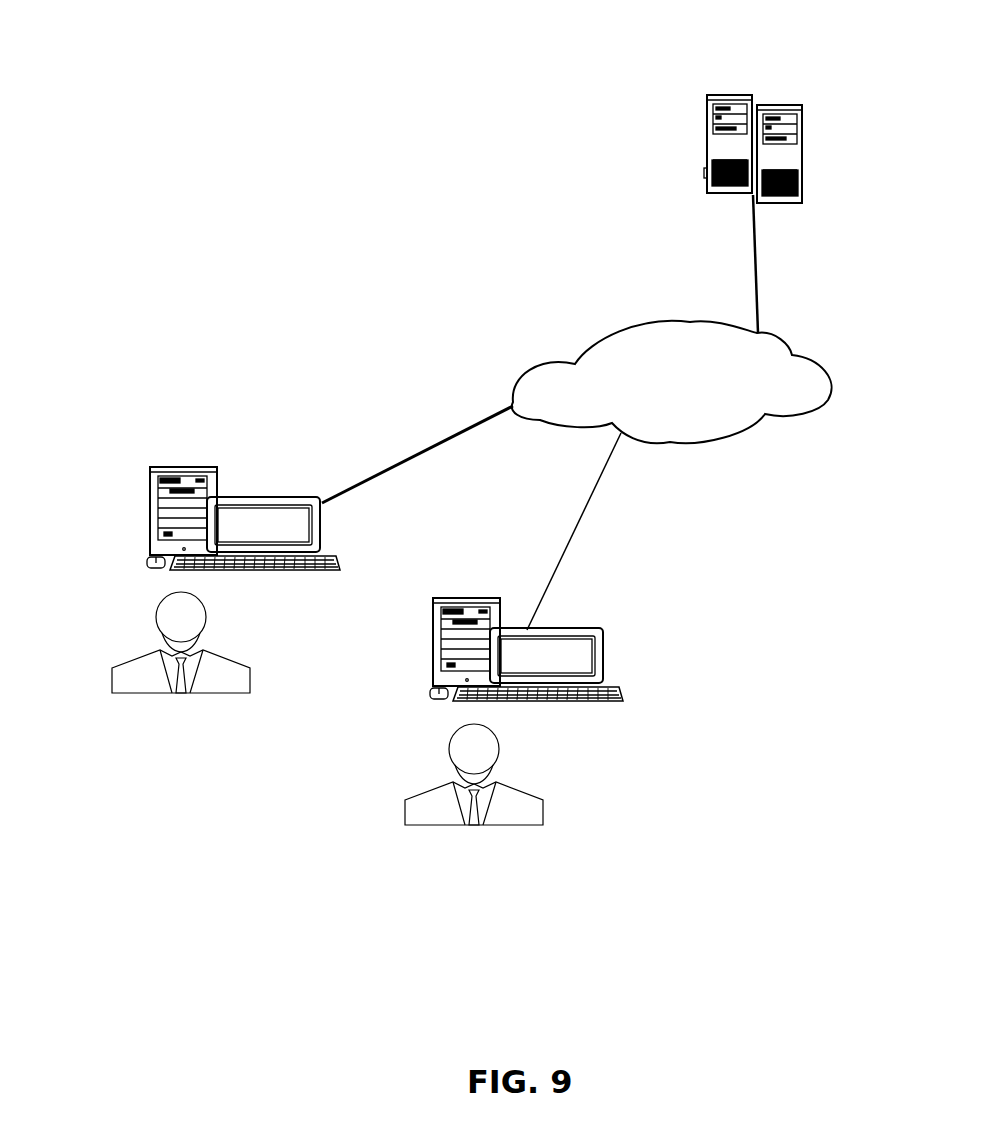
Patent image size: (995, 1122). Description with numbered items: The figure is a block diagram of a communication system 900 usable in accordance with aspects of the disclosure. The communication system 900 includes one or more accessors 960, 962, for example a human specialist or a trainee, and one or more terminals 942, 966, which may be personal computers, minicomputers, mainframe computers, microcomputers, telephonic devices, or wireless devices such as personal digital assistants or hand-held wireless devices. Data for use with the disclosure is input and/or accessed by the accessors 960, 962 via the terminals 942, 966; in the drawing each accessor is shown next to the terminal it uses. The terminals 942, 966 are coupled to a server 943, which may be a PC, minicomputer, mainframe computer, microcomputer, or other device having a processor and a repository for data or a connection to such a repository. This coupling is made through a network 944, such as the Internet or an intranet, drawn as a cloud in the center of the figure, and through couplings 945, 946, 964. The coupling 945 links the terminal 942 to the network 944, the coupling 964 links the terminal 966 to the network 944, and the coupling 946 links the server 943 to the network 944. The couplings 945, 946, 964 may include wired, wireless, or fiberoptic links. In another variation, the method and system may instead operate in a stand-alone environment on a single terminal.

The communication system 900 is at (198, 56).
The server 943 is at (733, 93).
The coupling 946 is at (757, 270).
The network 944 is at (610, 333).
The coupling 945 is at (365, 480).
The terminal 942 is at (185, 467).
The coupling 964 is at (600, 490).
The terminal 966 is at (600, 630).
The accessor 960 is at (145, 652).
The accessor 962 is at (520, 790).